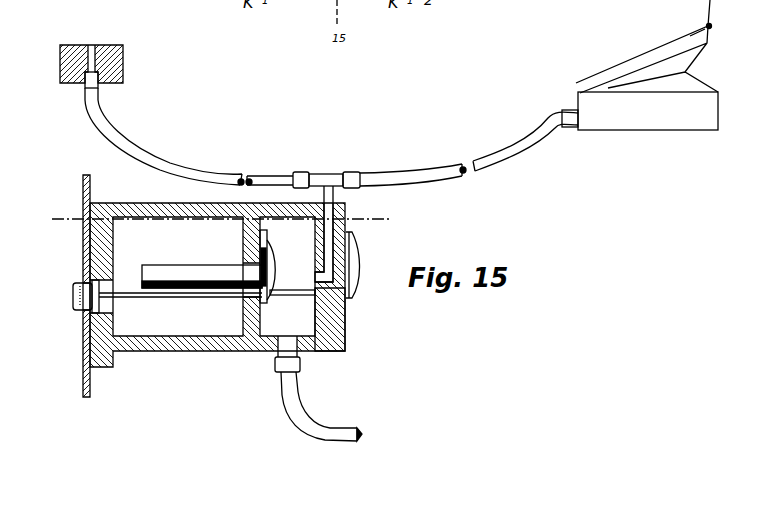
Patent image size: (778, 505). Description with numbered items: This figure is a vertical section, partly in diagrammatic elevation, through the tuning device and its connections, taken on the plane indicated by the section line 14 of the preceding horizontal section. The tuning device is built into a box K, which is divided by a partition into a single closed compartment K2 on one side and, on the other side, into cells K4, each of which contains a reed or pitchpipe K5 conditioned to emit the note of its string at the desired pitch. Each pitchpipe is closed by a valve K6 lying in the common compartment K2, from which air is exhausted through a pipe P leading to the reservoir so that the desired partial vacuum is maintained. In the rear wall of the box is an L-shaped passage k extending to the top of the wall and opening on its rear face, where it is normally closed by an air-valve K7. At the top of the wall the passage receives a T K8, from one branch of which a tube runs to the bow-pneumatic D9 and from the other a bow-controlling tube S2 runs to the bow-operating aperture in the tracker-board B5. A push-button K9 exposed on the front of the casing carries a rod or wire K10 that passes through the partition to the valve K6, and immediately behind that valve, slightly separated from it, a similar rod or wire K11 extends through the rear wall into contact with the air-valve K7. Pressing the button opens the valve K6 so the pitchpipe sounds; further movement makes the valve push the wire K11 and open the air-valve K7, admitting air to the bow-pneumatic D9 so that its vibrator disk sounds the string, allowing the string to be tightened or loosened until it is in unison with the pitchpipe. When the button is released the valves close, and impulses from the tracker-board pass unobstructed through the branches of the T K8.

The tracker-board B5 is at (91, 51).
The bow-controlling tube S2 is at (184, 170).
The T K8 is at (324, 182).
The bow-pneumatic D9 is at (647, 78).
The section line 14 is at (224, 219).
The reed or pitchpipe K5 is at (202, 262).
The L-shaped passage k is at (332, 250).
The valve K6 is at (266, 266).
The air-valve K7 is at (352, 286).
The push-button K9 is at (73, 292).
The rod or wire K10 is at (160, 297).
The rod or wire K11 is at (268, 296).
The closed compartment K2 is at (345, 317).
The cell K4 is at (122, 327).
The box K is at (194, 343).
The pipe P is at (309, 399).